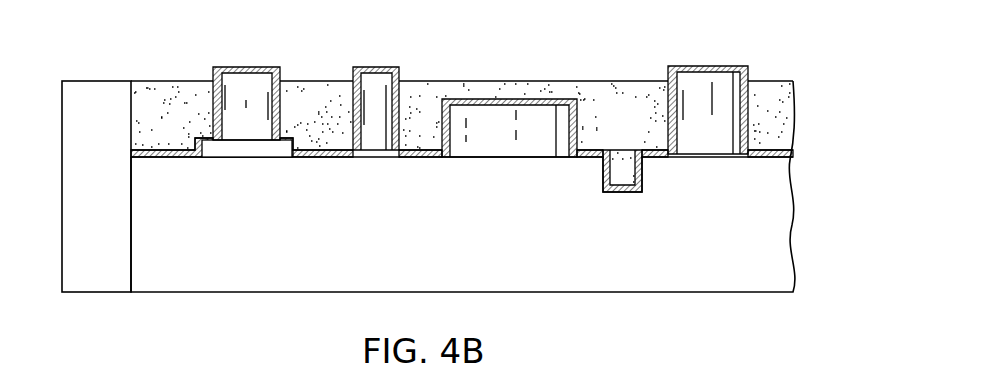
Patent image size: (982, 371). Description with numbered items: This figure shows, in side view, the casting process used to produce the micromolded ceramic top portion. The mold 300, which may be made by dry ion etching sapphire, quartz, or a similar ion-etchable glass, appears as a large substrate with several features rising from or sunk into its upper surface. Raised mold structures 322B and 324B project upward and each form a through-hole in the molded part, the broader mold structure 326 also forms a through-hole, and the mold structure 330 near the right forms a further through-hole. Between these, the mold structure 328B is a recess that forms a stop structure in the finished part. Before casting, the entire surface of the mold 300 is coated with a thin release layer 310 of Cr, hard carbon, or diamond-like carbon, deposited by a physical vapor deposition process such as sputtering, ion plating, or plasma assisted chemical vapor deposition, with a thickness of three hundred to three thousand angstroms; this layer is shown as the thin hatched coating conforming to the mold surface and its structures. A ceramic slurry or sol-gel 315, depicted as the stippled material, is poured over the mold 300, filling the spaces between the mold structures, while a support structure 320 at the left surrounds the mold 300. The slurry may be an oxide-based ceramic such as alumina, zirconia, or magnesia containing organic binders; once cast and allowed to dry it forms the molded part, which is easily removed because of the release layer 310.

The mold 300 is at (780, 240).
The release layer 310 is at (752, 72).
The ceramic slurry or sol-gel 315 is at (168, 93).
The support structure 320 is at (90, 98).
The mold structure 322B is at (240, 78).
The mold structure 324B is at (373, 80).
The mold structure 326 is at (492, 122).
The mold structure 328B is at (622, 192).
The mold structure 330 is at (685, 92).